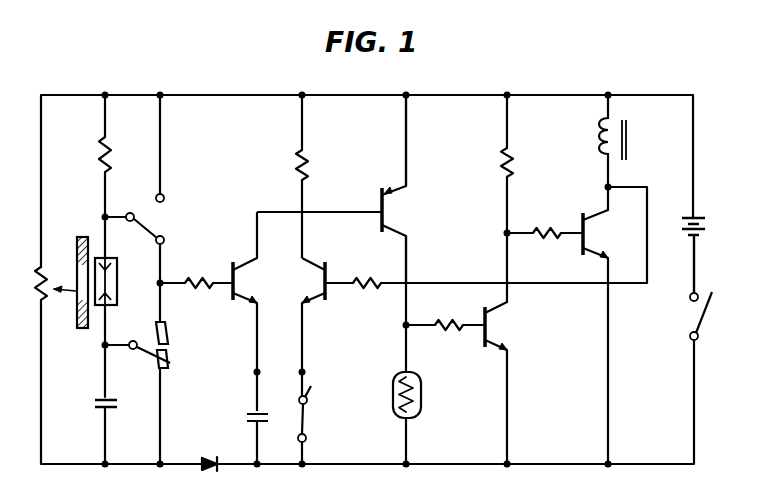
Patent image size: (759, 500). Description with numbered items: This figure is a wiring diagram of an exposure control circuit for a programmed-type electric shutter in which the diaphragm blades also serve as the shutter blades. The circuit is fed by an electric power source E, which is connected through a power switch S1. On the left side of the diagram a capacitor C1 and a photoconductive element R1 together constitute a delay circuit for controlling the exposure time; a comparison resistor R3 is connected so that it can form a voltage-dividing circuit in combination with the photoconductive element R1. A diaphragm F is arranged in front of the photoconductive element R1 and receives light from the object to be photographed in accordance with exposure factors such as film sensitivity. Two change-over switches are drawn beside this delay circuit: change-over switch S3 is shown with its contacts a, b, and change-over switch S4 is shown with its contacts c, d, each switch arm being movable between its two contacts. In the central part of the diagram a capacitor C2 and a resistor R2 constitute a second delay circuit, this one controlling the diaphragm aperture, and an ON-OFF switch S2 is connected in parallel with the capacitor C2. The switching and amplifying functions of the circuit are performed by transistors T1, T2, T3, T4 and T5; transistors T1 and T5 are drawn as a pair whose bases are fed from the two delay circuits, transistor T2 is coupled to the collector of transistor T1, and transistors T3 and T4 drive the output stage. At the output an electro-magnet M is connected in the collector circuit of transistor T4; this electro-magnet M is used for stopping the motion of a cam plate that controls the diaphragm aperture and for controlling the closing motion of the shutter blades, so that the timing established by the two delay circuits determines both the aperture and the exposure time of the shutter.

The comparison resistor R3 is at (98, 161).
The change-over switch S3 is at (150, 210).
The switch contact b is at (169, 201).
The switch contact a is at (167, 246).
The diaphragm F is at (77, 246).
The photoconductive element R1 is at (118, 282).
The change-over switch S4 is at (148, 354).
The switch contact d is at (169, 330).
The switch contact c is at (168, 368).
The capacitor C1 is at (97, 400).
The transistor T1 is at (253, 262).
The resistor R2 is at (310, 167).
The transistor T2 is at (380, 204).
The transistor T5 is at (326, 300).
The capacitor C2 is at (248, 415).
The ON-OFF switch S2 is at (312, 410).
The transistor T3 is at (483, 340).
The transistor T4 is at (582, 218).
The electro-magnet M is at (628, 149).
The electric power source E is at (690, 216).
The power switch S1 is at (692, 315).